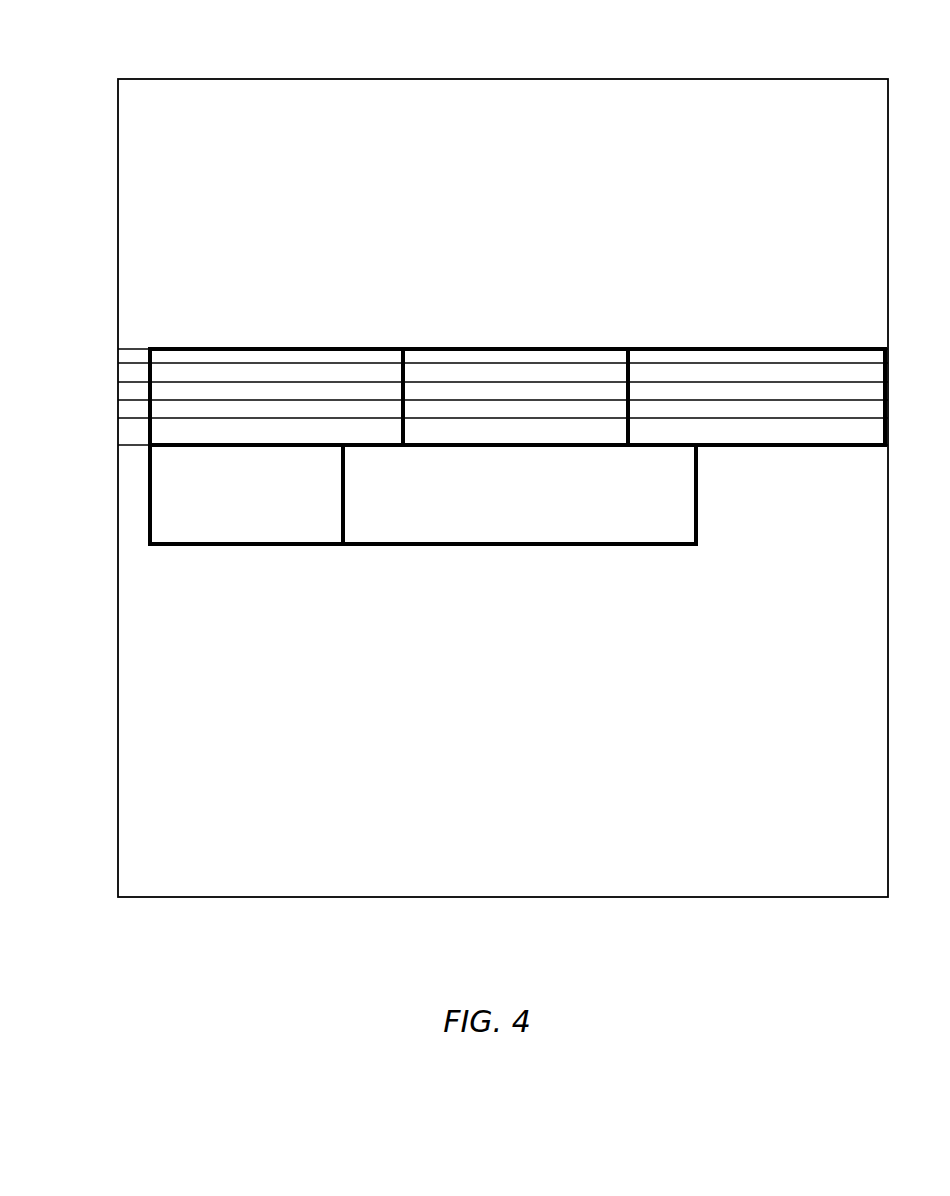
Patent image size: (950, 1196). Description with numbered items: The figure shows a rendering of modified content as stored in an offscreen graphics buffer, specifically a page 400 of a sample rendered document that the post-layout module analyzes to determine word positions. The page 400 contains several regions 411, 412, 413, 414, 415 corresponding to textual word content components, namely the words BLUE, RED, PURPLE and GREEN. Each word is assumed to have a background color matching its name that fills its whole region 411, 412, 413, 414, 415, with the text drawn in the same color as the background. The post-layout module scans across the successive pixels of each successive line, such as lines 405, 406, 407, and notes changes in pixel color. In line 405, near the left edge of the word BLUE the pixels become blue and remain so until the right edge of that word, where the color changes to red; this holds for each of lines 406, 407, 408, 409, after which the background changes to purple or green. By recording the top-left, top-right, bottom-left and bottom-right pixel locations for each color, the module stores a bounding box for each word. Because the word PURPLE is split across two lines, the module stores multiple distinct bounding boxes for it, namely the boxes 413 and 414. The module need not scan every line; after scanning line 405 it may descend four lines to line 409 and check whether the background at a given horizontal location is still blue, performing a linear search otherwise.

The page 400 is at (118, 79).
The line 405 is at (118, 357).
The line 406 is at (118, 379).
The line 407 is at (118, 392).
The line 408 is at (116, 408).
The line 409 is at (118, 431).
The region 411 is at (168, 346).
The region 412 is at (432, 346).
The region 413 is at (650, 346).
The region 414 is at (172, 546).
The region 415 is at (372, 546).